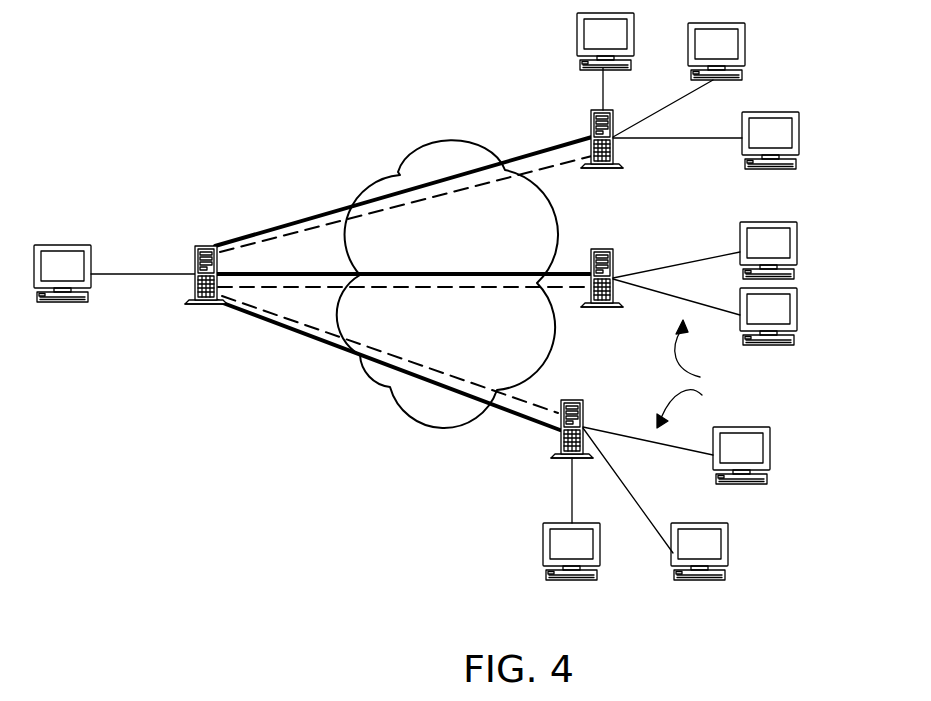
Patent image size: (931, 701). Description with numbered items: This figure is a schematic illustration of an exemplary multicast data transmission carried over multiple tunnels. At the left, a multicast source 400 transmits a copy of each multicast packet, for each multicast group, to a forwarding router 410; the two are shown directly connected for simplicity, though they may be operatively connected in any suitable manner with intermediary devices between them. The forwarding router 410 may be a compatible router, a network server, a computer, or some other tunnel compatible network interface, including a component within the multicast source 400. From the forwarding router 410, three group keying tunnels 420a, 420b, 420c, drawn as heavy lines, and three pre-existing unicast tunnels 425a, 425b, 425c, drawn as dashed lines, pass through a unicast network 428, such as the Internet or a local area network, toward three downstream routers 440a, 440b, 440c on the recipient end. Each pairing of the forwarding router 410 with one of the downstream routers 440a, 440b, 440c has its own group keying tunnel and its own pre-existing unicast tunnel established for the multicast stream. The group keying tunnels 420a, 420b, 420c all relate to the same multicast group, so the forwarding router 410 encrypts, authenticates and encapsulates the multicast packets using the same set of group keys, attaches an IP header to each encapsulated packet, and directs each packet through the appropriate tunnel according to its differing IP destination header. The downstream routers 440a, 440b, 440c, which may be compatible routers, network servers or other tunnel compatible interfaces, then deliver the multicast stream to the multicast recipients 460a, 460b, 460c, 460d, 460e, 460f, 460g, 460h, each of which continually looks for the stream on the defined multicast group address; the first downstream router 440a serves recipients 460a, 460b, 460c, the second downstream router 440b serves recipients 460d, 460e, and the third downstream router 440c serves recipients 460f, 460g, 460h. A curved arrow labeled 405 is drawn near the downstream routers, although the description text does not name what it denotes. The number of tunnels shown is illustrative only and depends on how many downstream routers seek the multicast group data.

The multicast source 400 is at (66, 302).
The network 405 is at (698, 374).
The forwarding router 410 is at (212, 247).
The group keying tunnel 420a is at (372, 197).
The group keying tunnel 420b is at (478, 272).
The group keying tunnel 420c is at (330, 343).
The pre-existing unicast tunnel 425a is at (321, 228).
The pre-existing unicast tunnel 425b is at (425, 287).
The pre-existing unicast tunnel 425c is at (388, 354).
The unicast network 428 is at (430, 405).
The downstream router 440a is at (612, 165).
The downstream router 440b is at (607, 304).
The downstream router 440c is at (580, 398).
The multicast recipient 460a is at (577, 40).
The multicast recipient 460b is at (745, 50).
The multicast recipient 460c is at (799, 140).
The multicast recipient 460d is at (797, 250).
The multicast recipient 460e is at (797, 313).
The multicast recipient 460f is at (770, 457).
The multicast recipient 460g is at (728, 553).
The multicast recipient 460h is at (600, 550).